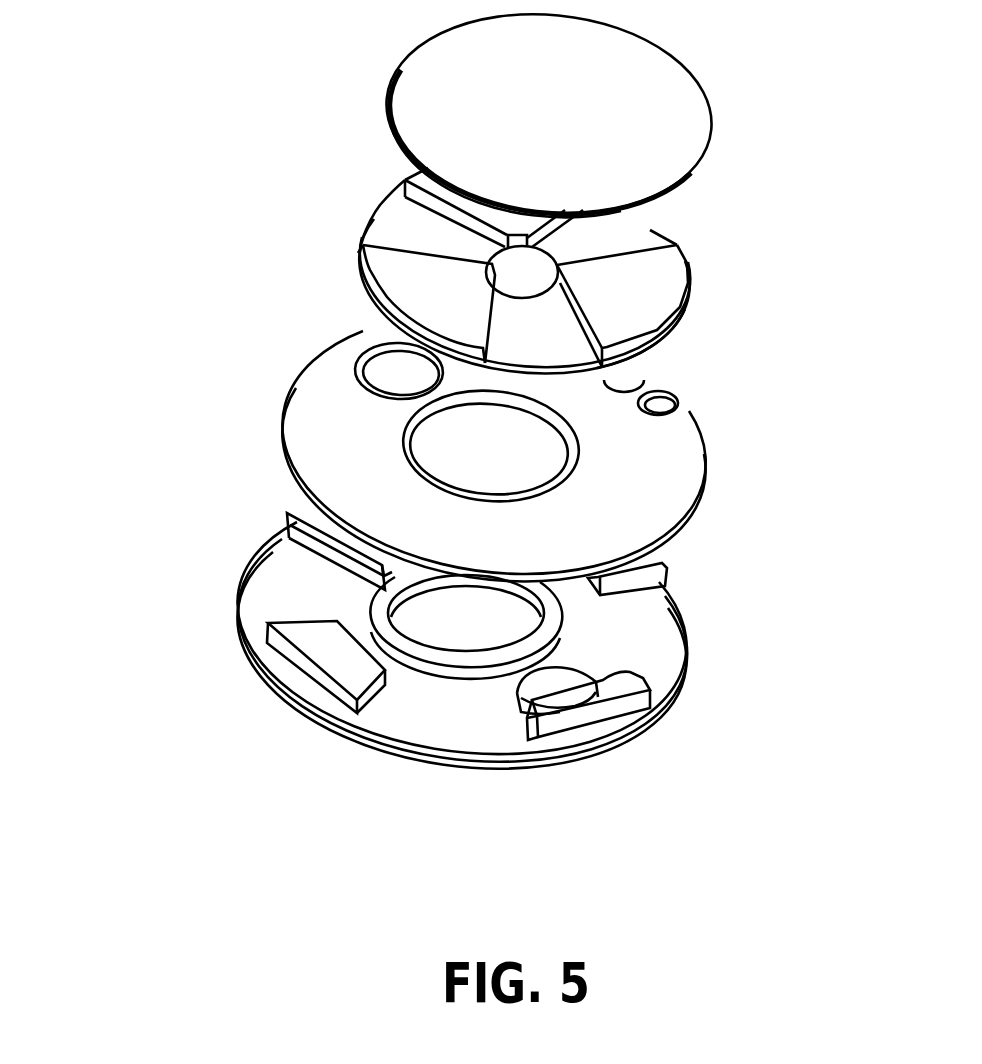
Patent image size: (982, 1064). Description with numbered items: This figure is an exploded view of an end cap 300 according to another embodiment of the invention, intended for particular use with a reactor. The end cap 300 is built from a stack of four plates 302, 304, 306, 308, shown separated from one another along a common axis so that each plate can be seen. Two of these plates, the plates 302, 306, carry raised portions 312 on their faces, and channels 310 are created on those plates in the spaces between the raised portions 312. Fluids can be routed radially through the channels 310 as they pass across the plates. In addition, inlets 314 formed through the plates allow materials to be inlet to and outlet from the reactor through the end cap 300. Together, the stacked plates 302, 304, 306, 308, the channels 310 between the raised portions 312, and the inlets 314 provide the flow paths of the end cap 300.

The end cap 300 is at (438, 413).
The plate 302 is at (694, 642).
The plate 304 is at (719, 453).
The plate 306 is at (703, 277).
The plate 308 is at (738, 110).
The channels 310 is at (383, 232).
The raised portions 312 is at (412, 295).
The inlets 314 is at (440, 440).